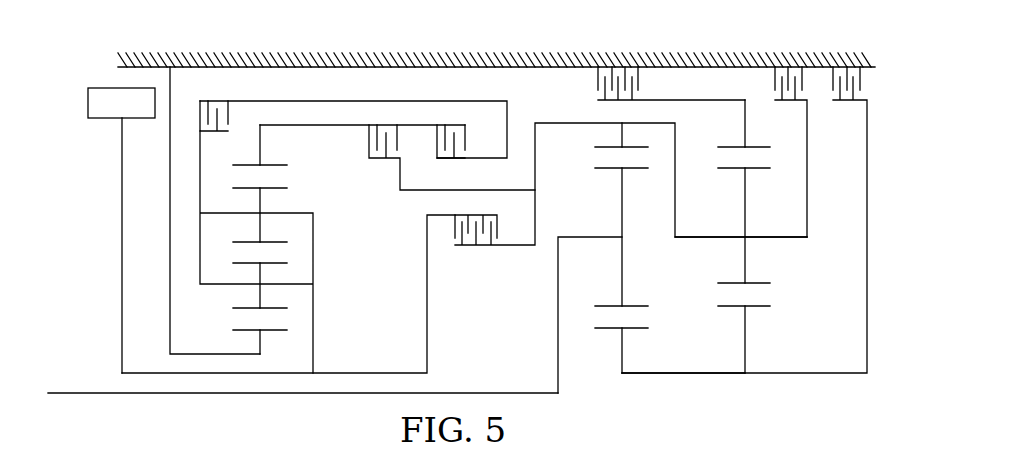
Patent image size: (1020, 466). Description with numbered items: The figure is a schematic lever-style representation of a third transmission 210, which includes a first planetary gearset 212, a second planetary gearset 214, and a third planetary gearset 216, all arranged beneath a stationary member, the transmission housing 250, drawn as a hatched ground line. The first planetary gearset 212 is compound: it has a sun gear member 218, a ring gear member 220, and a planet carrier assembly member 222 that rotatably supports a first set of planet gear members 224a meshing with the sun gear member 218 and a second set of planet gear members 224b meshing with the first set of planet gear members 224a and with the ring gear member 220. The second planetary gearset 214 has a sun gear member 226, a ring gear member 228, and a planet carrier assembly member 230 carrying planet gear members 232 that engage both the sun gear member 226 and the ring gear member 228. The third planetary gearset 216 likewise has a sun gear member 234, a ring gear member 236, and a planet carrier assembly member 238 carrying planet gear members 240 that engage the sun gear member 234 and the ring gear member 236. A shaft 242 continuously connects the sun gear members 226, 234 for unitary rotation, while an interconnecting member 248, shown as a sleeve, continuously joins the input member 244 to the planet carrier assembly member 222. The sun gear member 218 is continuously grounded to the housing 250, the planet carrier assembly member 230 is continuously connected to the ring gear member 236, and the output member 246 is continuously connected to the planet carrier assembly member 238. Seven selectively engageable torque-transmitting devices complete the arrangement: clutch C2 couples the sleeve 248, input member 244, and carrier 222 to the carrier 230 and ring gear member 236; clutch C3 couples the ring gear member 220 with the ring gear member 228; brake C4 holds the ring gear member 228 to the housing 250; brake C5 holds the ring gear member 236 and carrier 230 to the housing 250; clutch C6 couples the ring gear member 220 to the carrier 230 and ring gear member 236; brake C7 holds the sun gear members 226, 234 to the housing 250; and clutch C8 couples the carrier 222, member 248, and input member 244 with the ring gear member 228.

The transmission 210 is at (80, 70).
The transmission housing 250 is at (162, 56).
The input member 244 is at (120, 172).
The output member 246 is at (112, 394).
The interconnecting member 248 is at (244, 374).
The first planetary gearset 212 is at (220, 337).
The second planetary gearset 214 is at (768, 325).
The third planetary gearset 216 is at (649, 339).
The sun gear member 218 is at (279, 330).
The ring gear member 220 is at (279, 165).
The planet carrier assembly member 222 is at (313, 245).
The first set of planet gear members 224a is at (242, 309).
The second set of planet gear members 224b is at (279, 188).
The sun gear member 226 is at (728, 307).
The ring gear member 228 is at (736, 148).
The planet carrier assembly member 230 is at (792, 238).
The planet gear members 232 is at (760, 169).
The sun gear member 234 is at (608, 328).
The ring gear member 236 is at (608, 148).
The planet carrier assembly member 238 is at (591, 237).
The planet gear members 240 is at (630, 169).
The shaft 242 is at (712, 374).
The clutch C2 is at (447, 243).
The clutch C3 is at (427, 142).
The brake C4 is at (648, 83).
The brake C5 is at (763, 83).
The clutch C6 is at (358, 141).
The brake C7 is at (822, 83).
The clutch C8 is at (237, 112).